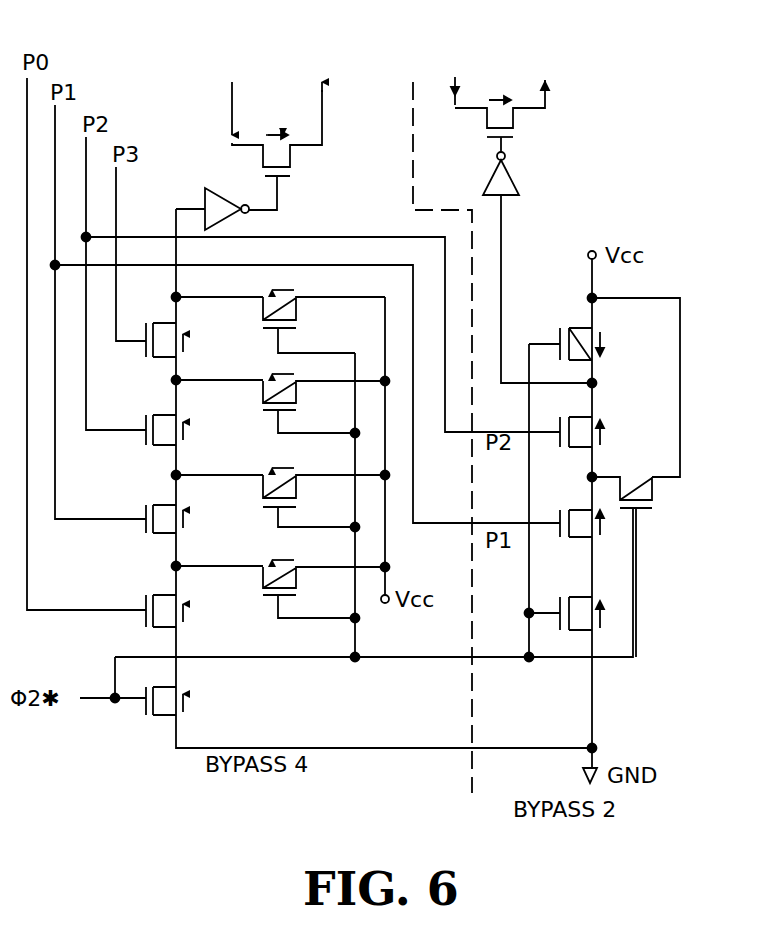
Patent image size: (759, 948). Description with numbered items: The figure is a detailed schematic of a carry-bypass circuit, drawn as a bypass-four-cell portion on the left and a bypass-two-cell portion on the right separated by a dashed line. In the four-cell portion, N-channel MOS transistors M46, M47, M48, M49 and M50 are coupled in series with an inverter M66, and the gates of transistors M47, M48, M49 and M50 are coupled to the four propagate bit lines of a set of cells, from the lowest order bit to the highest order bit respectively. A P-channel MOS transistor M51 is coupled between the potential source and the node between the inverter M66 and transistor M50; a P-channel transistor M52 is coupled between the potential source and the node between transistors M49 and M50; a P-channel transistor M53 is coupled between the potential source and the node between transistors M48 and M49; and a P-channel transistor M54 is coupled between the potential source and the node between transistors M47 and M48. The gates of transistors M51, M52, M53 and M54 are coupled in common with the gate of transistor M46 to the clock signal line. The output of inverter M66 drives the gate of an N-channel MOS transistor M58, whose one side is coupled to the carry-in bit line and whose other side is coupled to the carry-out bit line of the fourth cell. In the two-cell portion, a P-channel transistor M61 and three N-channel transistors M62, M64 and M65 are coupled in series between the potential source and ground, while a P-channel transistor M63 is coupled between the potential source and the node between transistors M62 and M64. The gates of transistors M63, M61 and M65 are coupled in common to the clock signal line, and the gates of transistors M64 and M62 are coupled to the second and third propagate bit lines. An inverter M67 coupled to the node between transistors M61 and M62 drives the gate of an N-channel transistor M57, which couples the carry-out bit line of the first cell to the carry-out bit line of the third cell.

The N-channel MOS transistor M46 is at (157, 720).
The N-channel MOS transistor M47 is at (163, 631).
The N-channel MOS transistor M48 is at (163, 538).
The N-channel MOS transistor M49 is at (163, 450).
The N-channel MOS transistor M50 is at (164, 358).
The P-channel MOS transistor M51 is at (298, 310).
The P-channel MOS transistor M52 is at (262, 393).
The P-channel MOS transistor M53 is at (262, 484).
The P-channel MOS transistor M54 is at (262, 577).
The N-channel MOS transistor M57 is at (516, 120).
The N-channel MOS transistor M58 is at (294, 158).
The P-channel MOS transistor M61 is at (578, 327).
The N-channel MOS transistor M62 is at (588, 416).
The P-channel MOS transistor M63 is at (650, 493).
The N-channel MOS transistor M64 is at (586, 510).
The N-channel MOS transistor M65 is at (586, 597).
The inverter M66 is at (235, 196).
The inverter M67 is at (514, 180).